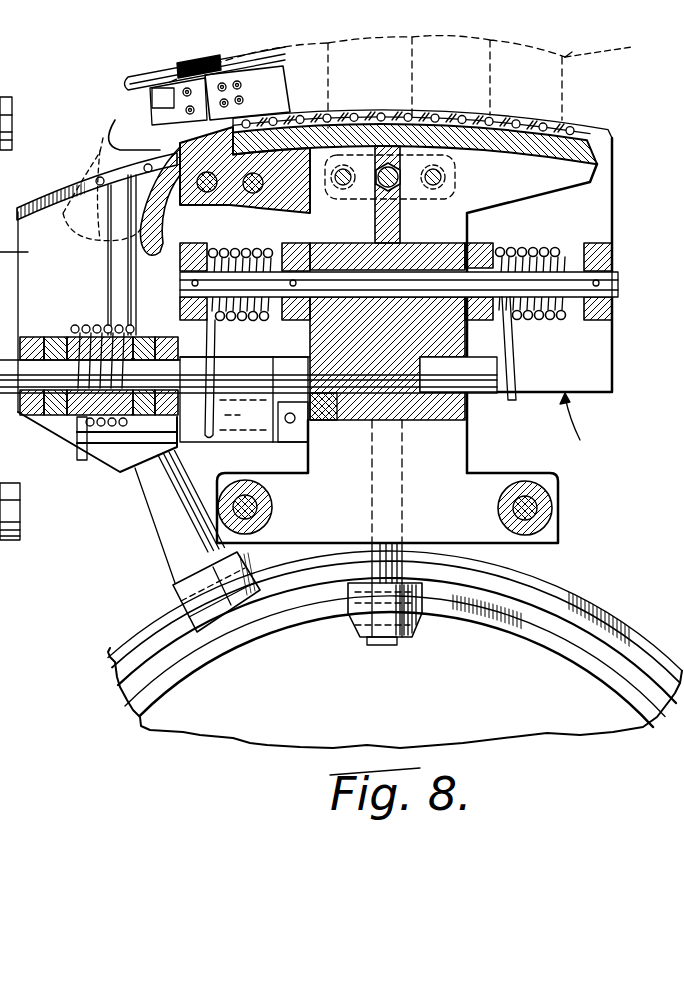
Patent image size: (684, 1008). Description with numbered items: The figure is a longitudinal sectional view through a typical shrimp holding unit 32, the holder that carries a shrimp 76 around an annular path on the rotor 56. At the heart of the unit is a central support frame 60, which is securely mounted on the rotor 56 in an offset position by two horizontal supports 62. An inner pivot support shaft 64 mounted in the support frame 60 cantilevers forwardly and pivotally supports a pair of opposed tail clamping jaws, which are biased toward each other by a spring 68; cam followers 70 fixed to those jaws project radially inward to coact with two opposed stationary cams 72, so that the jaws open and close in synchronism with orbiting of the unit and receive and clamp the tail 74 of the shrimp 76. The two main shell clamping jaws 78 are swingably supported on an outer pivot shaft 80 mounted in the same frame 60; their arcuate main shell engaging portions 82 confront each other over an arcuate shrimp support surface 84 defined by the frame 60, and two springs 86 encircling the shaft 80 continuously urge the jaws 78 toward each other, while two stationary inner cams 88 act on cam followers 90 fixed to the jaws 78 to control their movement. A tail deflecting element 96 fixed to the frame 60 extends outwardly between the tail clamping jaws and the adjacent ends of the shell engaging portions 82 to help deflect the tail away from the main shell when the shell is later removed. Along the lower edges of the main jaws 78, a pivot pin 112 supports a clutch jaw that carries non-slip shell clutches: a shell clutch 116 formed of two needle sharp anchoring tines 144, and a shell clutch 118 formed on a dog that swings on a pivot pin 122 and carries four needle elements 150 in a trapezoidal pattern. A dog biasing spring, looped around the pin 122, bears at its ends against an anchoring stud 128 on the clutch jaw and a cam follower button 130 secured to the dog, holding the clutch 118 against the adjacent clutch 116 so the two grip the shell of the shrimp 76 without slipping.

The shrimp holding unit 32 is at (582, 424).
The rotor 56 is at (0, 462).
The central support frame 60 is at (445, 457).
The horizontal supports 62 is at (275, 500).
The inner pivot support shaft 64 is at (485, 387).
The spring 68 is at (82, 462).
The cam followers 70 is at (180, 590).
The stationary cams 72 is at (640, 635).
The tail 74 is at (103, 143).
The shrimp 76 is at (613, 51).
The main shell clamping jaws 78 is at (593, 193).
The outer pivot shaft 80 is at (340, 273).
The arcuate main shell engaging portions 82 is at (573, 133).
The arcuate shrimp support surface 84 is at (592, 145).
The springs 86 is at (230, 246).
The stationary inner cams 88 is at (438, 612).
The cam followers 90 is at (360, 612).
The tail deflecting element 96 is at (150, 140).
The pivot pin 112 is at (212, 445).
The shell clutch 116 is at (175, 97).
The shell clutch 118 is at (243, 85).
The pivot pin 122 is at (283, 50).
The anchoring stud 128 is at (196, 66).
The cam follower button 130 is at (137, 76).
The anchoring tines 144 is at (175, 112).
The needle elements 150 is at (243, 100).